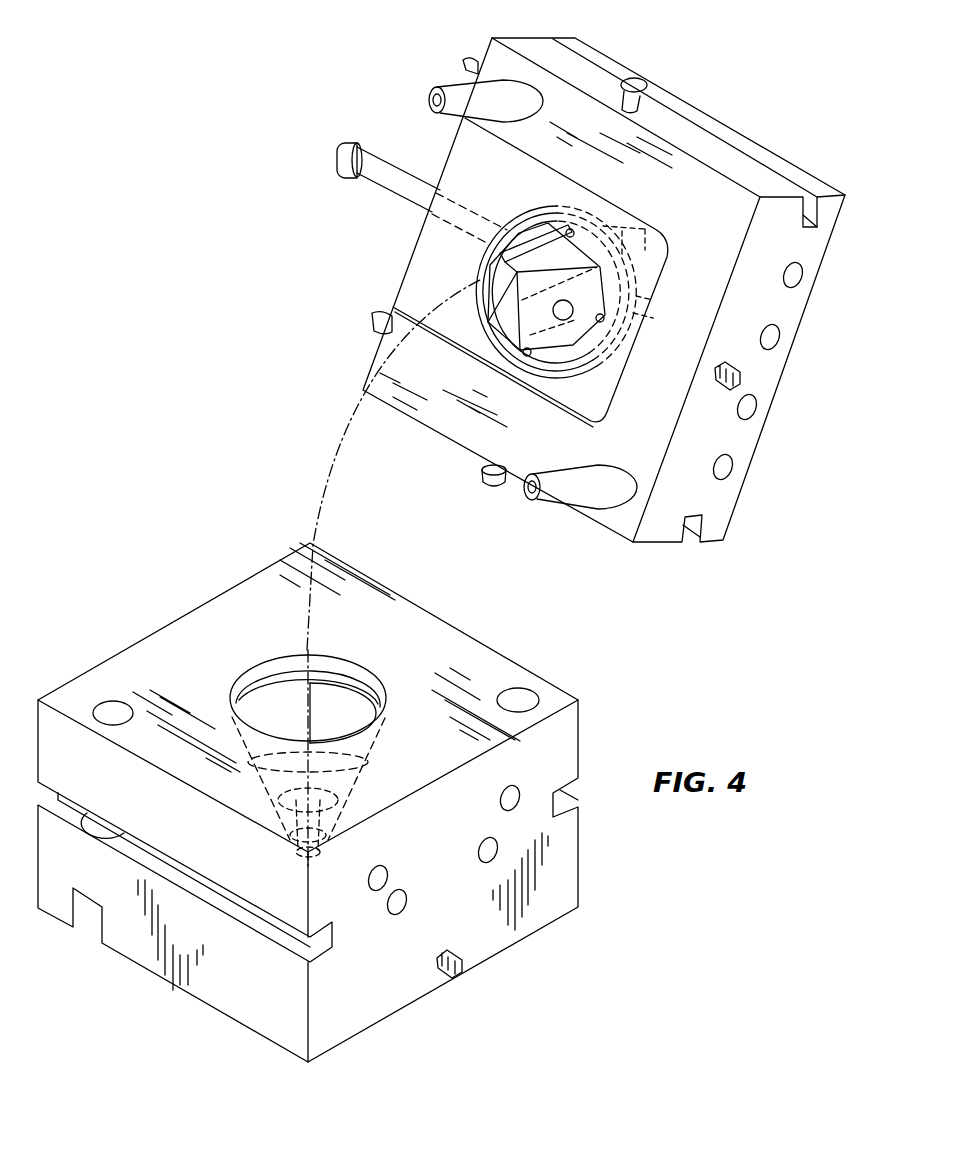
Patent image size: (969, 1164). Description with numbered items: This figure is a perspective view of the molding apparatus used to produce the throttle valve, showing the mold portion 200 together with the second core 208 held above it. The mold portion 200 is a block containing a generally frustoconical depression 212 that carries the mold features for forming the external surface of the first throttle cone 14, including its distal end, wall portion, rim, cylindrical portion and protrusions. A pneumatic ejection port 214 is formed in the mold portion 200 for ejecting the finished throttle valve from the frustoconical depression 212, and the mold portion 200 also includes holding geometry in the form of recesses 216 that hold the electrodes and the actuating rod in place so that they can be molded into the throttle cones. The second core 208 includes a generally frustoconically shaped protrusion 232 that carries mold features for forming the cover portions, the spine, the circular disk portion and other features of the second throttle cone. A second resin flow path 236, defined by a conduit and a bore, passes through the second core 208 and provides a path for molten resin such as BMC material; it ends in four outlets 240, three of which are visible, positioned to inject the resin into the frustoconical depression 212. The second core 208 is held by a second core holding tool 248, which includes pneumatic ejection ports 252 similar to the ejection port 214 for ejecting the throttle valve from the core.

The first throttle cone 14 is at (285, 697).
The mold portion 200 is at (562, 888).
The second core 208 is at (437, 268).
The frustoconical depression 212 is at (248, 675).
The pneumatic ejection port 214 is at (446, 968).
The recesses 216 is at (340, 805).
The frustoconically shaped protrusion 232 is at (540, 233).
The second resin flow path 236 is at (407, 177).
The outlets 240 is at (570, 228).
The second core holding tool 248 is at (792, 305).
The pneumatic ejection ports 252 is at (742, 375).